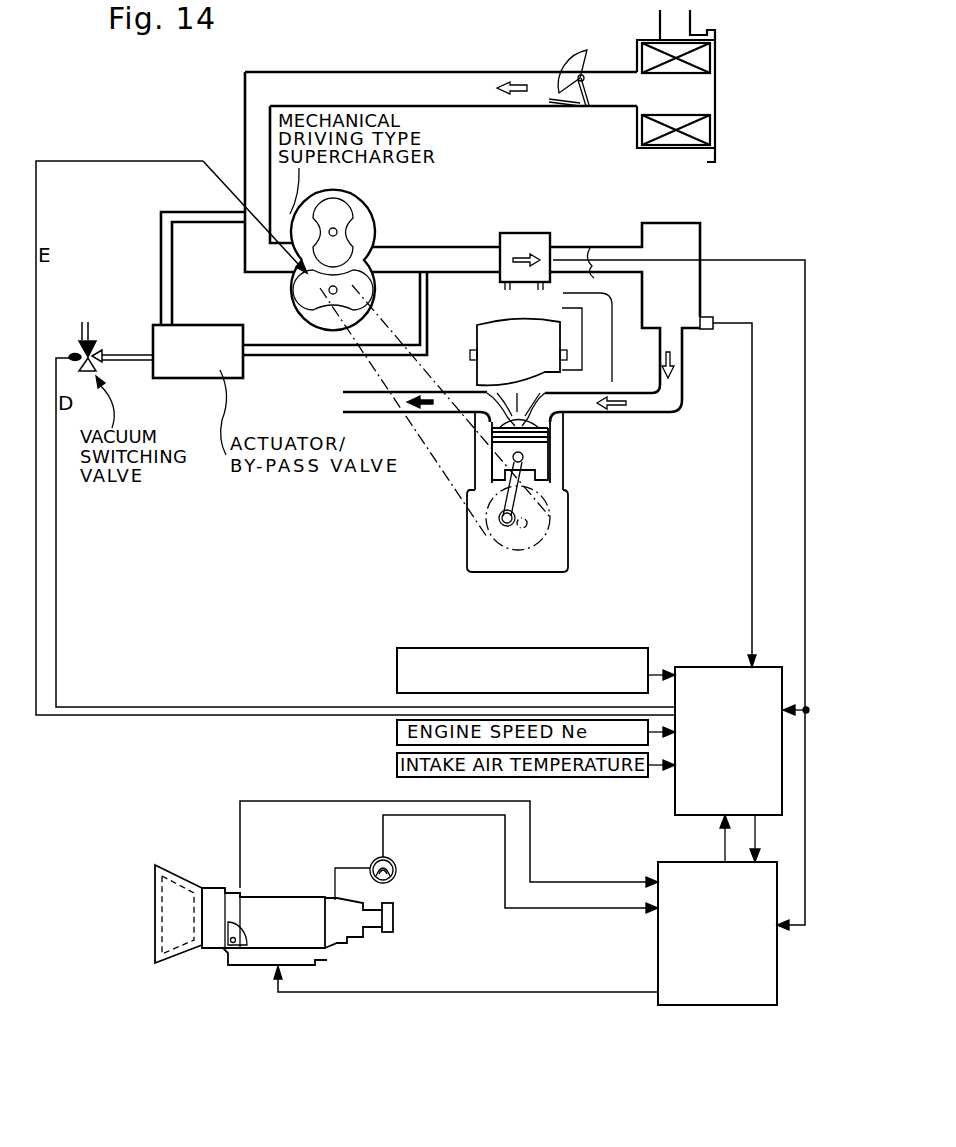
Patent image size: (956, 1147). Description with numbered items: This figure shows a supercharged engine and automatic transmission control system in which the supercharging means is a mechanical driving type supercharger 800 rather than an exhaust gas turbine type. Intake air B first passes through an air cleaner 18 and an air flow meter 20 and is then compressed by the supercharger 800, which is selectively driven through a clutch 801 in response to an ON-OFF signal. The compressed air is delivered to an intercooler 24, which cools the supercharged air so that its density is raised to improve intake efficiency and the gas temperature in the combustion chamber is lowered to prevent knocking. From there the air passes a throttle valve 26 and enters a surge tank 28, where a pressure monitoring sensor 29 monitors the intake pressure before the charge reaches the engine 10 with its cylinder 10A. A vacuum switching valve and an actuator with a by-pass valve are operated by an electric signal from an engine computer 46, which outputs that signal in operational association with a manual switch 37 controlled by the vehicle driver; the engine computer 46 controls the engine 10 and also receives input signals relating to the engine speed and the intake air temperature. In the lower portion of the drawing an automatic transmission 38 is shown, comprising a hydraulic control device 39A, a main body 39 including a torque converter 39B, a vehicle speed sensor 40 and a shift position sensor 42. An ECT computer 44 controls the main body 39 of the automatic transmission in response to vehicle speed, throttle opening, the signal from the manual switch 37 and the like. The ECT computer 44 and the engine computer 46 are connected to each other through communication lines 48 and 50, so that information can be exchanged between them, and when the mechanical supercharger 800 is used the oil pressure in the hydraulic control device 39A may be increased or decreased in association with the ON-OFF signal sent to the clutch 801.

The engine 10 is at (583, 470).
The cylinder head 10A is at (556, 428).
The air cleaner 18 is at (681, 147).
The air flow meter 20 is at (566, 82).
The intercooler 24 is at (573, 212).
The throttle valve 26 is at (590, 250).
The surge tank 28 is at (702, 302).
The pressure monitoring sensor 29 is at (710, 330).
The manual switch 37 is at (567, 648).
The automatic transmission 38 is at (402, 918).
The main body 39 is at (292, 927).
The hydraulic control device 39A is at (262, 966).
The torque converter 39B is at (178, 893).
The vehicle speed sensor 40 is at (398, 862).
The shift position sensor 42 is at (240, 948).
The ECT computer 44 is at (735, 1008).
The engine computer 46 is at (673, 792).
The communication line 48 is at (722, 848).
The communication line 50 is at (760, 840).
The mechanical driving type supercharger 800 is at (368, 213).
The clutch 801 is at (337, 265).
The intake air B is at (520, 97).